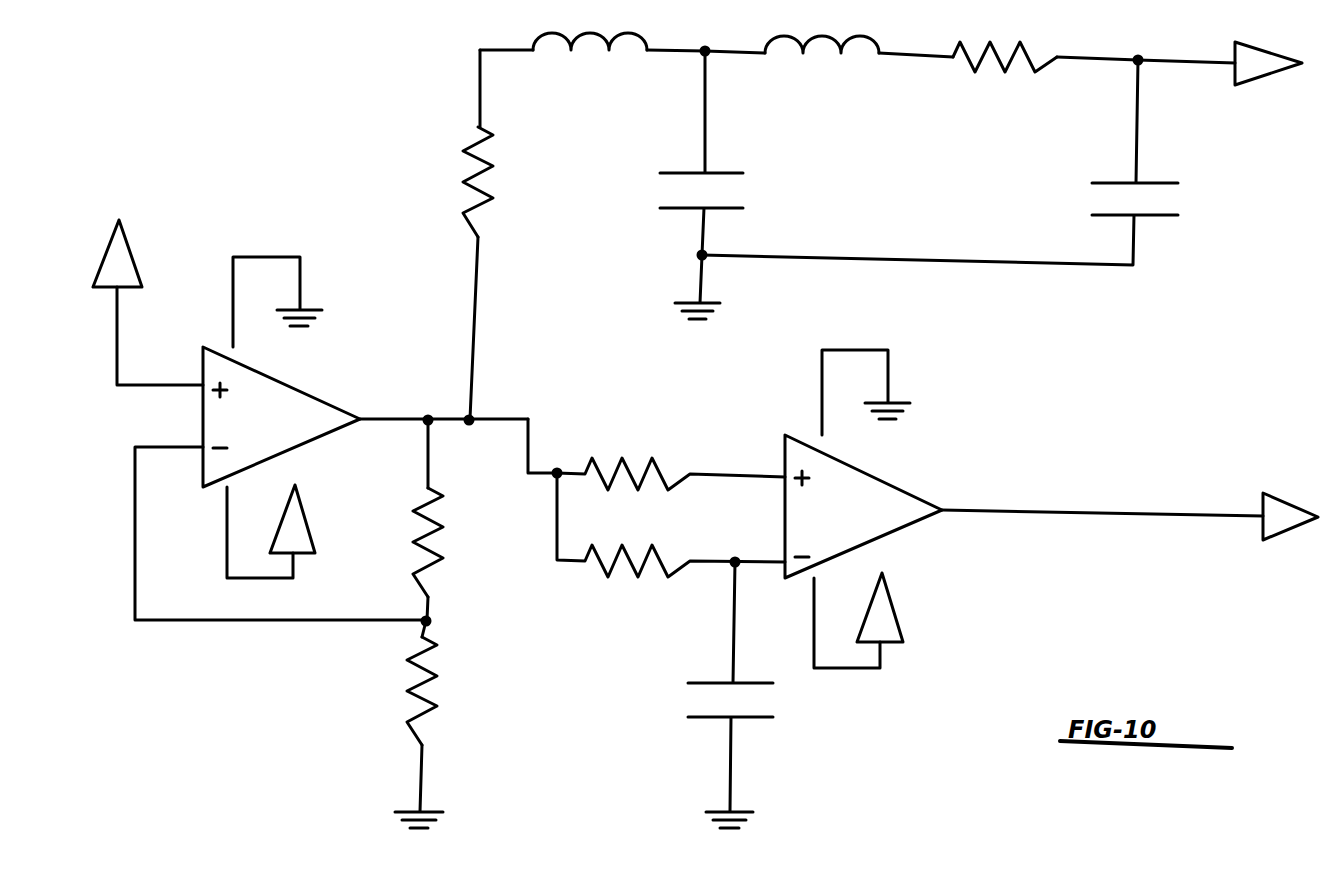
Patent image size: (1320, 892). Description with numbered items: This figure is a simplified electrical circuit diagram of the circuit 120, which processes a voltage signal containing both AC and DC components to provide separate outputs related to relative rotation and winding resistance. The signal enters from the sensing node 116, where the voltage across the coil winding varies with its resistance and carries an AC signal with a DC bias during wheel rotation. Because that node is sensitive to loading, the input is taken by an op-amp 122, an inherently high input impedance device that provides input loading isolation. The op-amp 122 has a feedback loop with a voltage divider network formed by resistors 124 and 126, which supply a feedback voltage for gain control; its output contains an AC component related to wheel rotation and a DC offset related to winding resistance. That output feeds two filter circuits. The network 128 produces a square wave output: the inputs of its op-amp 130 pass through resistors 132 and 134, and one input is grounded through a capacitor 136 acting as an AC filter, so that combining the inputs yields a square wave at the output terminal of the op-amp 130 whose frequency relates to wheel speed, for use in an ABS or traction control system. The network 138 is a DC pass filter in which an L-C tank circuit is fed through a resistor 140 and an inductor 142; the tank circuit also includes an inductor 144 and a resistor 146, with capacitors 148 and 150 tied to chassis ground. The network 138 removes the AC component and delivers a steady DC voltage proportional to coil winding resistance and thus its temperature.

The sensing node 116 is at (132, 253).
The circuit 120 is at (348, 220).
The op-amp 122 is at (290, 385).
The resistor 124 is at (433, 540).
The resistor 126 is at (430, 690).
The network 128 is at (930, 333).
The op-amp 130 is at (858, 470).
The resistor 132 is at (656, 454).
The resistor 134 is at (671, 548).
The capacitor 136 is at (773, 695).
The network 138 is at (856, 301).
The resistor 140 is at (450, 234).
The inductor 142 is at (592, 69).
The inductor 144 is at (829, 72).
The resistor 146 is at (1045, 79).
The capacitor 148 is at (735, 185).
The capacitor 150 is at (972, 162).